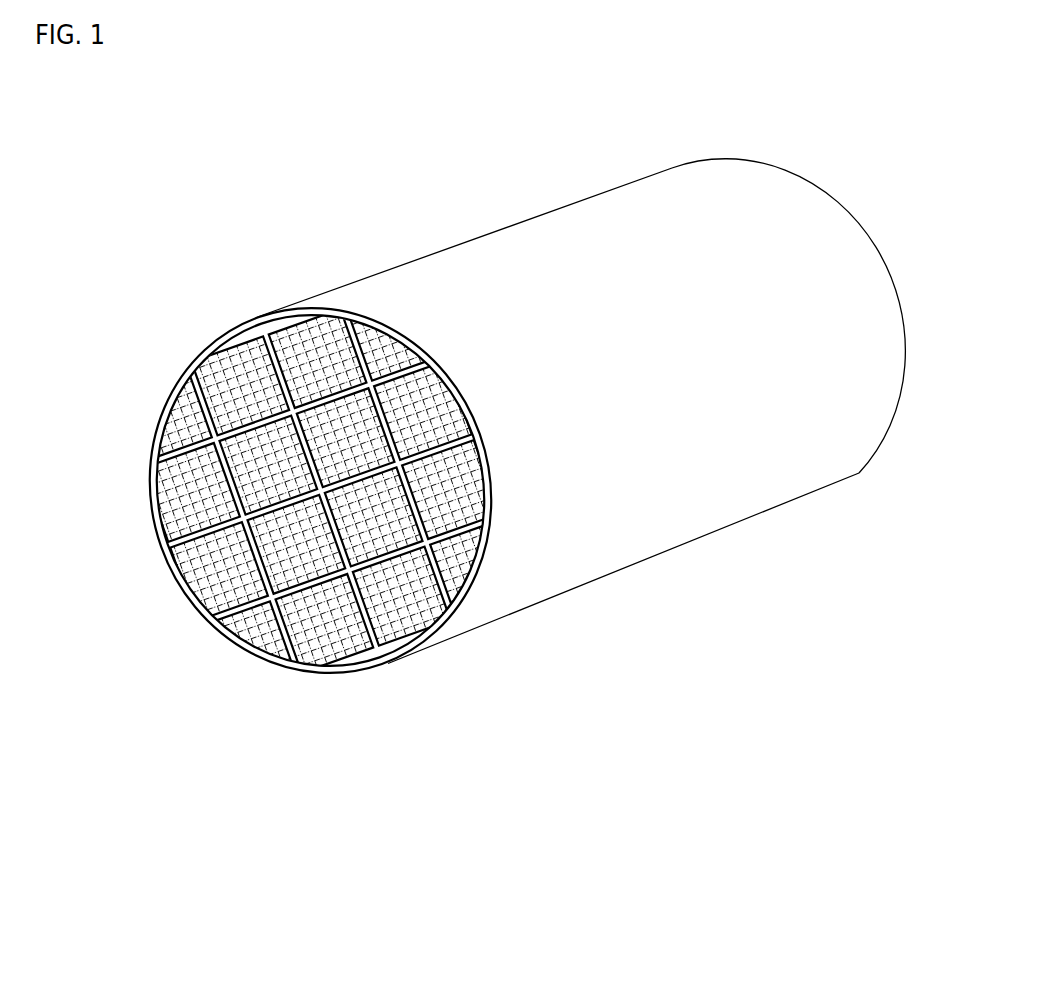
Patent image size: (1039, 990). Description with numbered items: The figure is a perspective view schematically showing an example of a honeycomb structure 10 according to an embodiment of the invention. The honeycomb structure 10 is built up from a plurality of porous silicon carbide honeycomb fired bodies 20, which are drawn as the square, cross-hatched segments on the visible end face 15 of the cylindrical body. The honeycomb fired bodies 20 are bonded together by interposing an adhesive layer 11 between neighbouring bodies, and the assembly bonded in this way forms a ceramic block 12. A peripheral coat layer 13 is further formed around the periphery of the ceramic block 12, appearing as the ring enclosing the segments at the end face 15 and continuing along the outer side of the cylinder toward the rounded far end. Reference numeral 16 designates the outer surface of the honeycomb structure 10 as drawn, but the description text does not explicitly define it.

The honeycomb structure 10 is at (503, 446).
The adhesive layer 11 is at (440, 582).
The ceramic block 12 is at (320, 536).
The peripheral coat layer 13 is at (447, 381).
The end face 15 is at (191, 492).
The side face 16 is at (690, 212).
The honeycomb fired body 20 is at (297, 544).